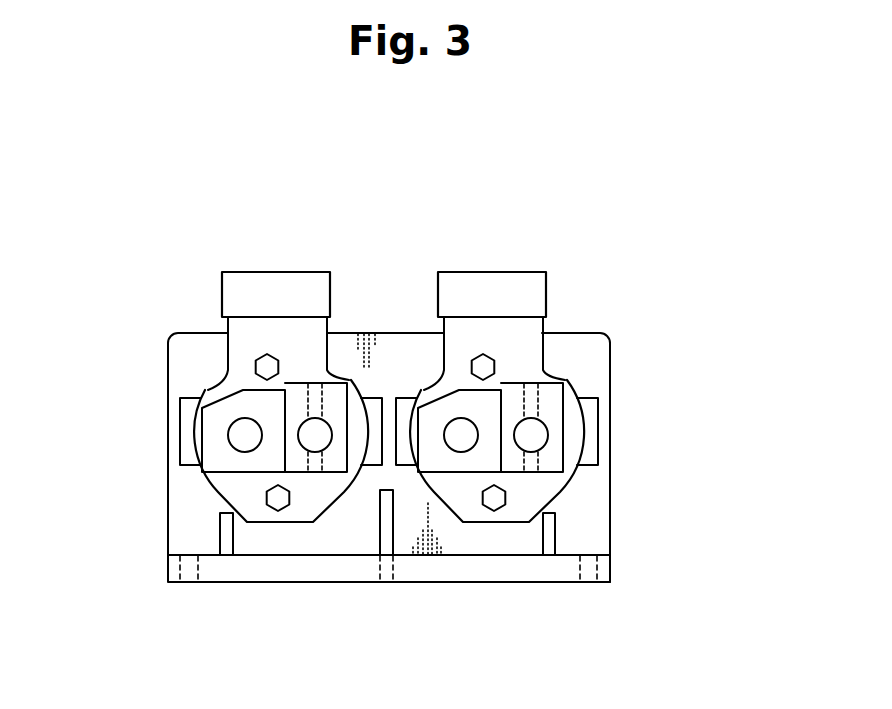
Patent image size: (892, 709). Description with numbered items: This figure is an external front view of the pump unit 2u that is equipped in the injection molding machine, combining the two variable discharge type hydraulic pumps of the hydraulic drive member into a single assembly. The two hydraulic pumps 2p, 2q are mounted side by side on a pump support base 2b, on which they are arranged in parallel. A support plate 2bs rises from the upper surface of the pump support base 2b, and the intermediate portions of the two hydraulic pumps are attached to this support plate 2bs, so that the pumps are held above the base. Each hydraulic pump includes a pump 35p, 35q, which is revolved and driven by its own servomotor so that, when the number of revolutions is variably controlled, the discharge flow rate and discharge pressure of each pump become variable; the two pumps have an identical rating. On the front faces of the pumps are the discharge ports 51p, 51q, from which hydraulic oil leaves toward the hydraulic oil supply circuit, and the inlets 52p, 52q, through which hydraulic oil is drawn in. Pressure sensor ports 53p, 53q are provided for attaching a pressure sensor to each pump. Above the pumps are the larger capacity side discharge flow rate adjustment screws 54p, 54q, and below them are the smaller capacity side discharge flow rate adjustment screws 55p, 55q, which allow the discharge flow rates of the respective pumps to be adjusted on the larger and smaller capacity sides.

The pump unit 2u is at (537, 205).
The hydraulic pump 2p is at (320, 257).
The hydraulic pump 2q is at (552, 260).
The pump support base 2b is at (613, 520).
The support plate 2bs is at (610, 360).
The pump 35p is at (203, 478).
The pump 35q is at (572, 478).
The discharge port 51p is at (328, 445).
The discharge port 51q is at (548, 434).
The inlet 52p is at (232, 437).
The inlet 52q is at (458, 452).
The pressure sensor port 53p is at (313, 385).
The pressure sensor port 53q is at (532, 385).
The larger capacity side discharge flow rate adjustment screw 54p is at (258, 357).
The larger capacity side discharge flow rate adjustment screw 54q is at (485, 355).
The smaller capacity side discharge flow rate adjustment screw 55p is at (270, 508).
The smaller capacity side discharge flow rate adjustment screw 55q is at (505, 507).